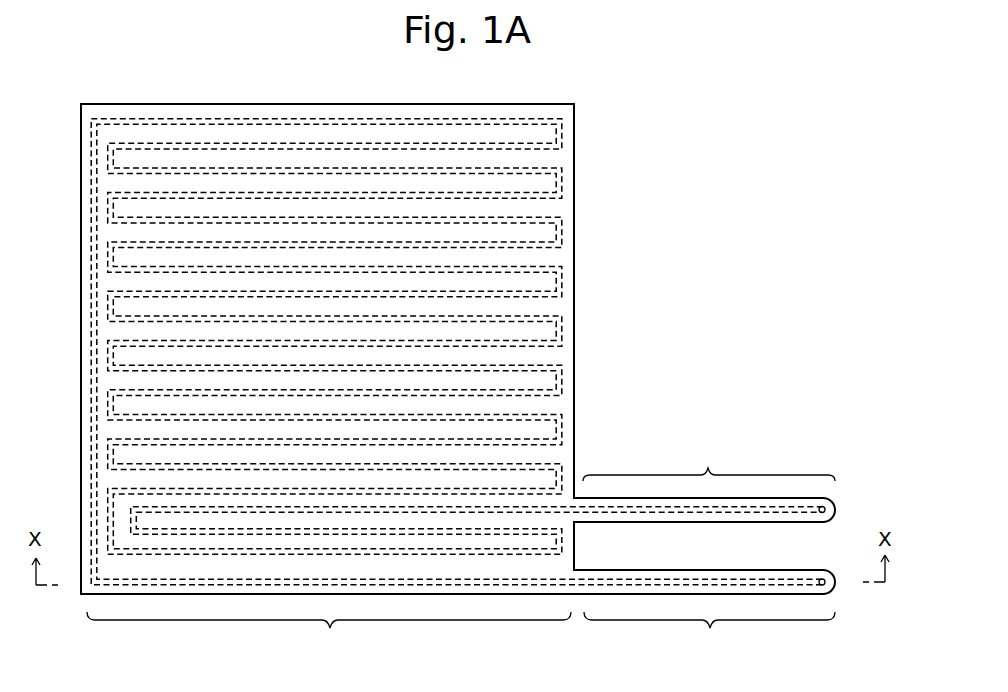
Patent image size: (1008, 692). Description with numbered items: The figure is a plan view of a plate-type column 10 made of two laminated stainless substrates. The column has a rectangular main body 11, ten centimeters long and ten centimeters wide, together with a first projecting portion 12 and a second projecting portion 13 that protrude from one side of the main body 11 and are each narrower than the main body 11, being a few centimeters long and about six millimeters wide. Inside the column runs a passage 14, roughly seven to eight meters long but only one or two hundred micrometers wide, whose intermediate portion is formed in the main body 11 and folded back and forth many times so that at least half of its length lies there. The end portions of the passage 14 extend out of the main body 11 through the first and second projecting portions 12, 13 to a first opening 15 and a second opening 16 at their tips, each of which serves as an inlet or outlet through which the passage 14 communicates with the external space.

The plate-type column 10 is at (609, 150).
The main body 11 is at (329, 636).
The first projecting portion 12 is at (709, 636).
The second projecting portion 13 is at (709, 462).
The passage 14 is at (562, 333).
The first opening 15 is at (825, 585).
The second opening 16 is at (825, 507).